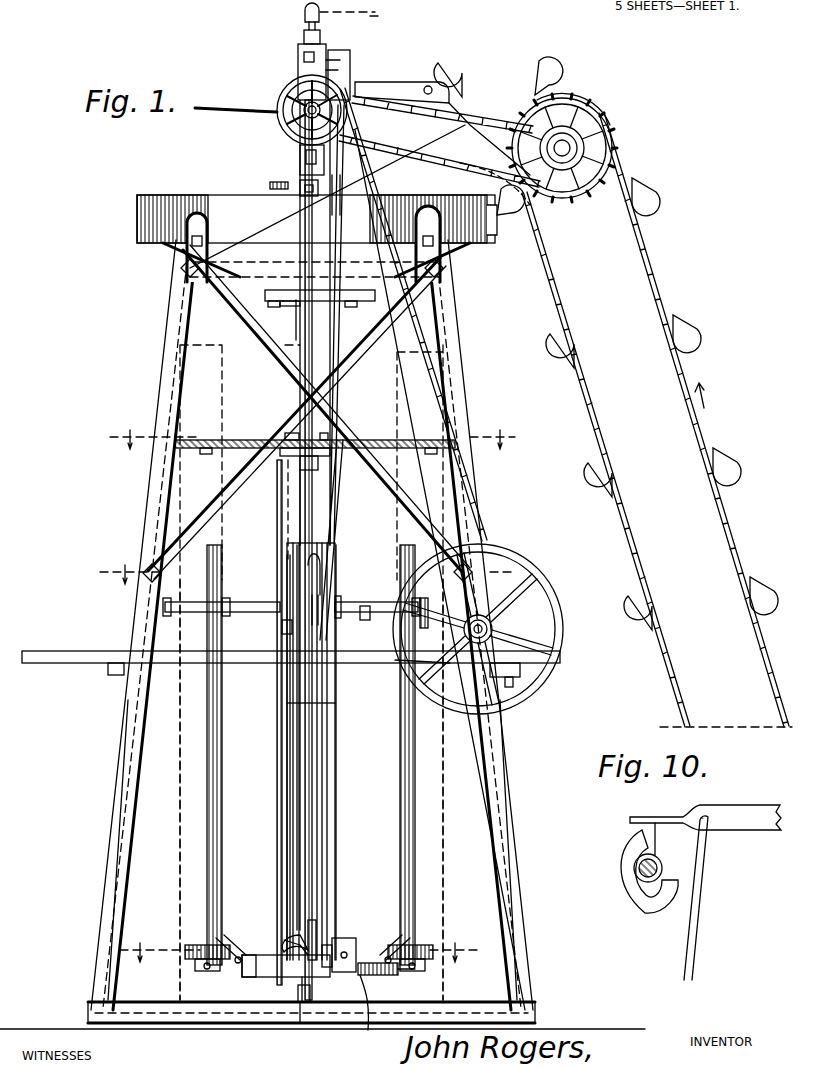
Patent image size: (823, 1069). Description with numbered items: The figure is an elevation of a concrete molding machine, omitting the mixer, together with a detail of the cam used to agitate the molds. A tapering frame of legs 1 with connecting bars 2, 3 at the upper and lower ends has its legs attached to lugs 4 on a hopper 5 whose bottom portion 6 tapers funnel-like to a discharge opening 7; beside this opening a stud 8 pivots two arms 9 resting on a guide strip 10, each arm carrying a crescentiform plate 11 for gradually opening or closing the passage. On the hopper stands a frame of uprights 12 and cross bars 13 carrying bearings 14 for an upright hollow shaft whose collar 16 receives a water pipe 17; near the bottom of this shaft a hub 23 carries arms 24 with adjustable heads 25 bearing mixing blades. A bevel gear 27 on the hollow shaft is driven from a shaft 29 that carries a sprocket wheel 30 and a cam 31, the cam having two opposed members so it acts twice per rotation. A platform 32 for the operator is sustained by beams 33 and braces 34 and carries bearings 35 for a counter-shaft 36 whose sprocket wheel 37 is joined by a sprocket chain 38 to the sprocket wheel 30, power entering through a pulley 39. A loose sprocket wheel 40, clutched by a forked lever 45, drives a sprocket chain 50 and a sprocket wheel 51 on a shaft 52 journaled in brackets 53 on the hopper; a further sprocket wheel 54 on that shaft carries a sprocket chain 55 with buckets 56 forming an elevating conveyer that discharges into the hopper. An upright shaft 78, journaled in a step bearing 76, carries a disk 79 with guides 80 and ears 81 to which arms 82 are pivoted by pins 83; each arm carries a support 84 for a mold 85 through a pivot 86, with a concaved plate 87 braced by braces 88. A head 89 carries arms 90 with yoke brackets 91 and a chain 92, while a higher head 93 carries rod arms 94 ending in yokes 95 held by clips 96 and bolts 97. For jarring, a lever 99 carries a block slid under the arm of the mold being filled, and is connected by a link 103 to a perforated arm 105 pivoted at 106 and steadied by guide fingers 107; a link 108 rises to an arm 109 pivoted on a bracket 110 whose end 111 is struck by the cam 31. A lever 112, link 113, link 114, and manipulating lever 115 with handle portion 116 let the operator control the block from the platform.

In FIG. 1, the legs 1 is at (118, 868).
In FIG. 1, the connecting bars 2 is at (203, 290).
In FIG. 1, the connecting bars 3 is at (158, 1010).
In FIG. 1, the lugs 4 is at (190, 222).
In FIG. 1, the hopper 5 is at (137, 216).
In FIG. 1, the bottom portion 6 is at (316, 260).
In FIG. 1, the discharge opening 7 is at (307, 359).
In FIG. 1, the stud 8 is at (301, 573).
In FIG. 1, the arms 9 is at (265, 295).
In FIG. 1, the guide strip 10 is at (288, 306).
In FIG. 1, the crescentiform plate 11 is at (310, 303).
In FIG. 1, the uprights 12 is at (350, 62).
In FIG. 1, the cross bars 13 is at (340, 55).
In FIG. 1, the bearings 14 is at (298, 62).
In FIG. 1, the collar 16 is at (304, 36).
In FIG. 1, the pipe 17 is at (305, 20).
In FIG. 1, the hub 23 is at (270, 184).
In FIG. 1, the arms 24 is at (305, 200).
In FIG. 1, the heads 25 is at (300, 188).
In FIG. 1, the bevel gear 27 is at (280, 103).
In FIG. 1, the shaft 29 is at (282, 118).
In FIG. 10, the shaft 29 is at (634, 873).
In FIG. 1, the sprocket wheel 30 is at (285, 92).
In FIG. 10, the cam 31 is at (650, 896).
In FIG. 1, the platform 32 is at (58, 651).
In FIG. 1, the bars or beams 33 is at (108, 672).
In FIG. 1, the braces 34 is at (110, 758).
In FIG. 1, the bearings 35 is at (462, 648).
In FIG. 1, the counter-shaft 36 is at (492, 632).
In FIG. 1, the sprocket wheel 37 is at (535, 600).
In FIG. 1, the sprocket chain 38 is at (360, 362).
In FIG. 1, the pulley 39 is at (563, 648).
In FIG. 1, the sprocket wheel 40 is at (334, 118).
In FIG. 1, the lever 45 is at (250, 112).
In FIG. 1, the sprocket chain 50 is at (490, 115).
In FIG. 1, the sprocket wheel 51 is at (585, 112).
In FIG. 1, the shaft 52 is at (575, 146).
In FIG. 1, the brackets 53 is at (560, 196).
In FIG. 1, the sprocket wheel 54 is at (590, 190).
In FIG. 1, the sprocket chain 55 is at (648, 275).
In FIG. 1, the buckets 56 is at (660, 212).
In FIG. 1, the step bearing 76 is at (298, 992).
In FIG. 1, the upright shaft 78 is at (334, 514).
In FIG. 1, the disk 79 is at (276, 978).
In FIG. 1, the guides 80 is at (357, 960).
In FIG. 1, the ears 81 is at (355, 948).
In FIG. 1, the arm 82 is at (398, 975).
In FIG. 1, the pivot pin or bolt 83 is at (386, 1012).
In FIG. 1, the support 84 is at (186, 958).
In FIG. 1, the mold 85 is at (178, 812).
In FIG. 1, the pivot pin or bolt 86 is at (205, 971).
In FIG. 1, the guide and supporting plate 87 is at (222, 822).
In FIG. 1, the braces 88 is at (222, 938).
In FIG. 1, the head 89 is at (340, 618).
In FIG. 1, the arms 90 is at (266, 602).
In FIG. 1, the yoke brackets 91 is at (230, 612).
In FIG. 1, the chain 92 is at (282, 638).
In FIG. 1, the head 93 is at (318, 465).
In FIG. 1, the arms 94 is at (250, 440).
In FIG. 1, the yoke 95 is at (206, 450).
In FIG. 1, the clips 96 is at (328, 434).
In FIG. 1, the bolts 97 is at (292, 432).
In FIG. 1, the lever 99 is at (305, 1025).
In FIG. 1, the link 103 is at (338, 755).
In FIG. 1, the arm 105 is at (288, 670).
In FIG. 1, the pivot 106 is at (300, 660).
In FIG. 1, the guide fingers 107 is at (311, 751).
In FIG. 1, the link 108 is at (337, 532).
In FIG. 10, the link 108 is at (697, 942).
In FIG. 1, the arm 109 is at (442, 97).
In FIG. 10, the arm 109 is at (762, 832).
In FIG. 1, the bracket 110 is at (462, 84).
In FIG. 1, the end 111 is at (380, 82).
In FIG. 10, the end 111 is at (648, 817).
In FIG. 1, the lever 112 is at (290, 948).
In FIG. 1, the link 113 is at (304, 985).
In FIG. 1, the link 114 is at (312, 902).
In FIG. 1, the manipulating lever 115 is at (296, 860).
In FIG. 1, the handle portion 116 is at (268, 485).